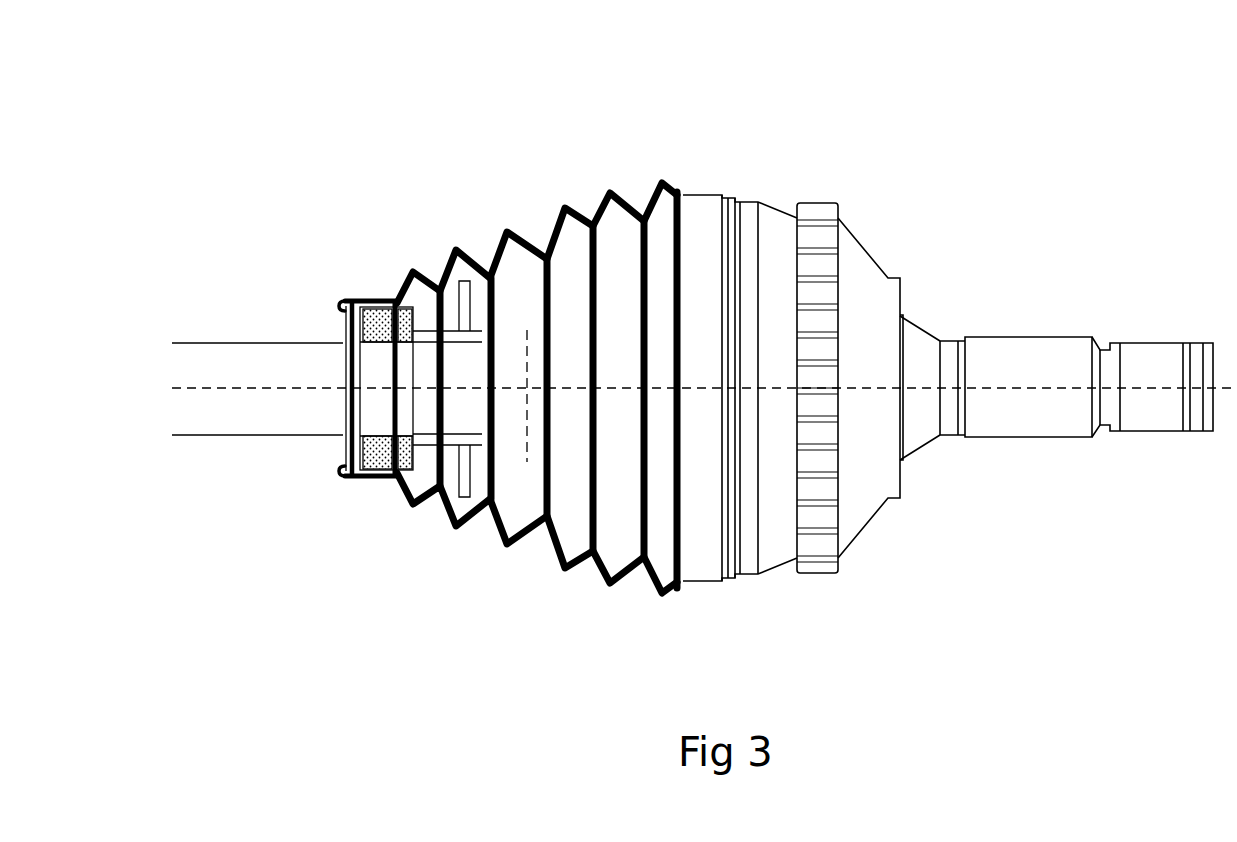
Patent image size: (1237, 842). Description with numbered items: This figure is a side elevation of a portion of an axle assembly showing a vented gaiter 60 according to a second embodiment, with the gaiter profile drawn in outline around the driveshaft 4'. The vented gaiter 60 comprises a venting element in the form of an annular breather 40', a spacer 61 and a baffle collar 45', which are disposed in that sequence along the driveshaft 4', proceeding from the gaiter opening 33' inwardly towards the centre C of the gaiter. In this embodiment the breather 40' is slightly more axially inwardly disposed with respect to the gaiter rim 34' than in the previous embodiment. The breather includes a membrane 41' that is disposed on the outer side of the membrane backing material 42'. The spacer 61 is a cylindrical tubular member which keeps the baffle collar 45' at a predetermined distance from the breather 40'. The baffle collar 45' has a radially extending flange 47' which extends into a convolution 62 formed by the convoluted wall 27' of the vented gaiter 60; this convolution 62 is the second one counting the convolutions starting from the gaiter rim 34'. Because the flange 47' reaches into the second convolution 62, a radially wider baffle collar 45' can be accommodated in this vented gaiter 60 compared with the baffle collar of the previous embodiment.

The driveshaft 4' is at (257, 389).
The convoluted wall 27' is at (537, 433).
The gaiter opening 33' is at (348, 380).
The gaiter rim 34' is at (353, 322).
The annular breather 40' is at (263, 454).
The membrane 41' is at (314, 503).
The membrane backing material 42' is at (386, 457).
The baffle collar 45' is at (518, 530).
The radially extending flange 47' is at (451, 328).
The vented gaiter 60 is at (661, 178).
The spacer 61 is at (424, 441).
The convolution 62 is at (463, 532).
The center plane C is at (526, 390).